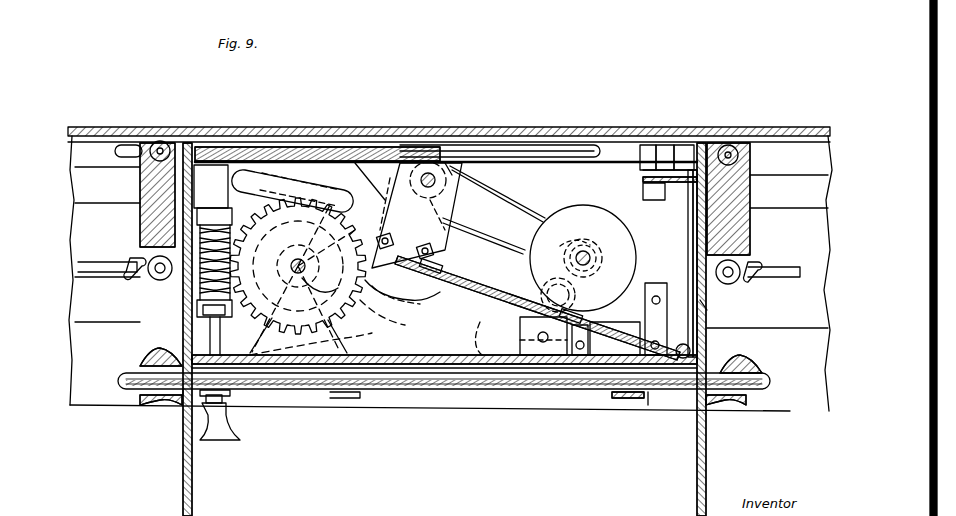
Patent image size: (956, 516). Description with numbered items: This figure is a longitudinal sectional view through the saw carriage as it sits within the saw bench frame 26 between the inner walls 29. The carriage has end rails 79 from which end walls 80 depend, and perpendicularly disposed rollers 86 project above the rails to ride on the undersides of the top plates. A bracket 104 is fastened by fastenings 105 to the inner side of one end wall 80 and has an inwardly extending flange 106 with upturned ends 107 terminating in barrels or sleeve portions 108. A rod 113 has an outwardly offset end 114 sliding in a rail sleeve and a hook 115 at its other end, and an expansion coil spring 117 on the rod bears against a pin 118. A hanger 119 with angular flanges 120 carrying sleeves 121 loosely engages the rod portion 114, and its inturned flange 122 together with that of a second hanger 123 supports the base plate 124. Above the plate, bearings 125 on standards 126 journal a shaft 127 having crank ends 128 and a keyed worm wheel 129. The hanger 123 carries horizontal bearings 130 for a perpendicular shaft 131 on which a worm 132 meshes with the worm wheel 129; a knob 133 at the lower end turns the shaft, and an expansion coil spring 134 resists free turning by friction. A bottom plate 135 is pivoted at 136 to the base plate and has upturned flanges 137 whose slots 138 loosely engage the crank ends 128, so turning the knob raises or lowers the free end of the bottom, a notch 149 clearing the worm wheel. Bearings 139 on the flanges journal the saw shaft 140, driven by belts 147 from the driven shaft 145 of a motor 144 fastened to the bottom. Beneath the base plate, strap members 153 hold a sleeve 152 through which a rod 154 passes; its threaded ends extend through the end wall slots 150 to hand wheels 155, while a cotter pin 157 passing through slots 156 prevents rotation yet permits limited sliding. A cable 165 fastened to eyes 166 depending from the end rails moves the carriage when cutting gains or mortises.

The frame 26 is at (102, 420).
The inner walls 29 is at (792, 412).
The end rails 79 is at (752, 200).
The end walls 80 is at (194, 500).
The rollers 86 is at (163, 140).
The bracket 104 is at (692, 232).
The fastenings 105 is at (688, 210).
The flange 106 is at (643, 192).
The upturned ends 107 is at (642, 179).
The barrels or sleeve portions 108 is at (661, 146).
The rod 113 is at (505, 146).
The offset ends 114 is at (646, 146).
The hooks 115 is at (128, 150).
The springs 117 is at (235, 148).
The pins 118 is at (300, 182).
The hanger 119 is at (707, 315).
The angular flanges 120 is at (194, 176).
The sleeves or barrel portions 121 is at (684, 146).
The inturned flange 122 is at (649, 406).
The hanger 123 is at (197, 308).
The base plate 124 is at (408, 370).
The bearings 125 is at (298, 266).
The standards 126 is at (350, 324).
The shaft 127 is at (308, 272).
The crank ends 128 is at (358, 160).
The worm wheel 129 is at (298, 266).
The bearings 130 is at (197, 210).
The shaft 131 is at (240, 398).
The worm 132 is at (197, 290).
The hand wheel or knob 133 is at (229, 445).
The expansion coil spring 134 is at (180, 418).
The bottom plate 135 is at (494, 298).
The pivot 136 is at (706, 348).
The upturned flanges 137 is at (408, 215).
The slots 138 is at (320, 165).
The bearing 139 is at (428, 172).
The shaft 140 is at (448, 162).
The motor 144 is at (571, 218).
The driven shaft 145 is at (598, 262).
The belts 147 is at (505, 200).
The notch 149 is at (405, 292).
The slot 150 is at (178, 398).
The sleeve 152 is at (528, 395).
The strap members 153 is at (618, 400).
The rod 154 is at (372, 392).
The hand wheels 155 is at (140, 354).
The slots 156 is at (748, 362).
The cotter pin 157 is at (440, 355).
The cable or flexible member 165 is at (100, 272).
The eyes 166 is at (112, 262).